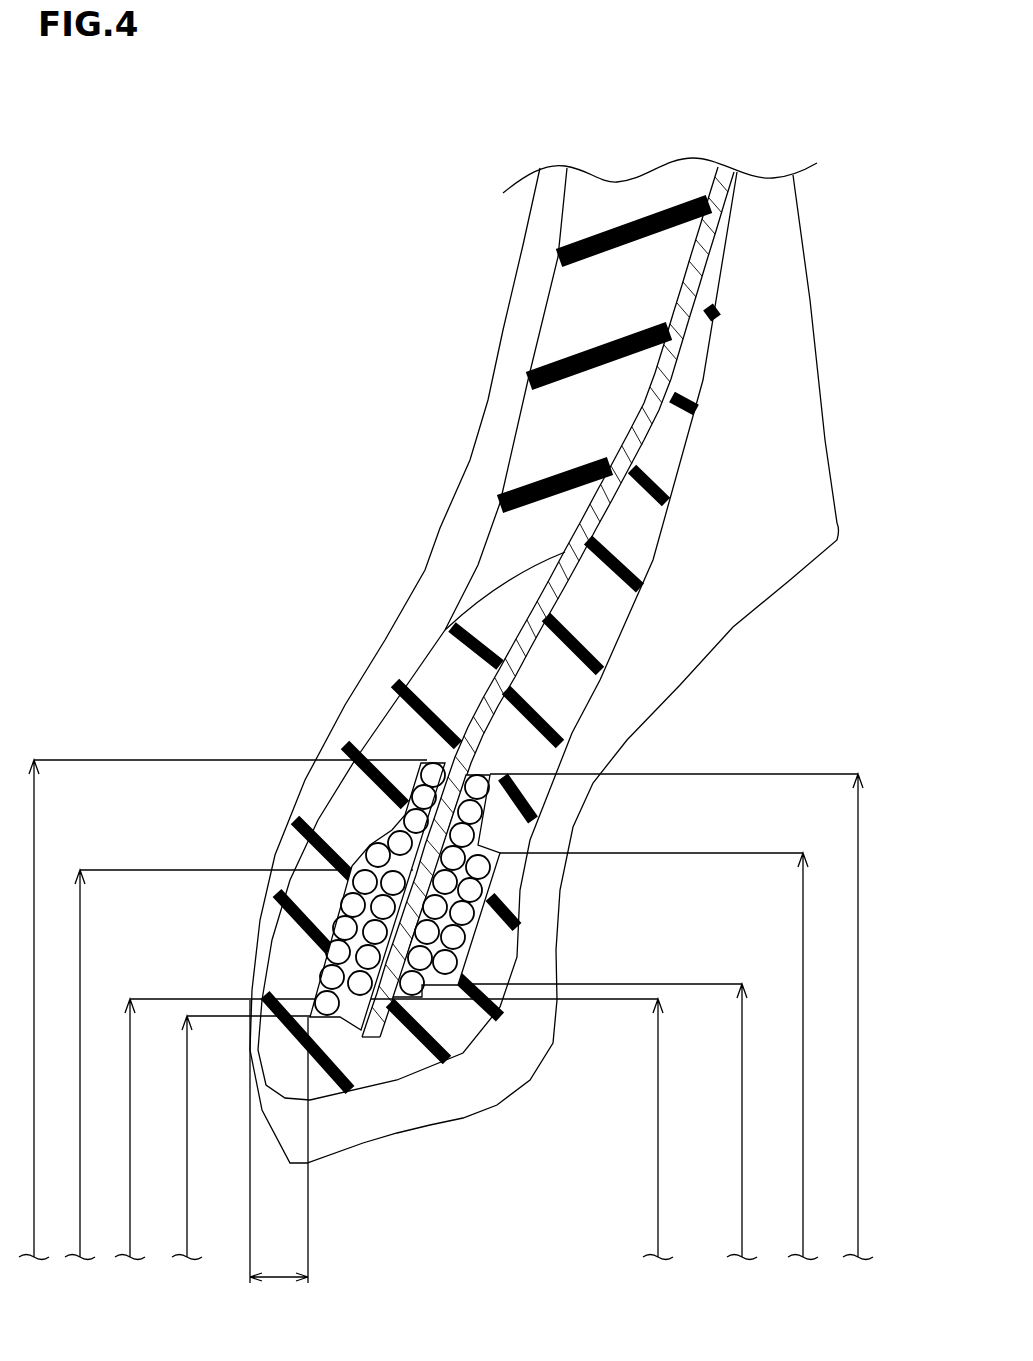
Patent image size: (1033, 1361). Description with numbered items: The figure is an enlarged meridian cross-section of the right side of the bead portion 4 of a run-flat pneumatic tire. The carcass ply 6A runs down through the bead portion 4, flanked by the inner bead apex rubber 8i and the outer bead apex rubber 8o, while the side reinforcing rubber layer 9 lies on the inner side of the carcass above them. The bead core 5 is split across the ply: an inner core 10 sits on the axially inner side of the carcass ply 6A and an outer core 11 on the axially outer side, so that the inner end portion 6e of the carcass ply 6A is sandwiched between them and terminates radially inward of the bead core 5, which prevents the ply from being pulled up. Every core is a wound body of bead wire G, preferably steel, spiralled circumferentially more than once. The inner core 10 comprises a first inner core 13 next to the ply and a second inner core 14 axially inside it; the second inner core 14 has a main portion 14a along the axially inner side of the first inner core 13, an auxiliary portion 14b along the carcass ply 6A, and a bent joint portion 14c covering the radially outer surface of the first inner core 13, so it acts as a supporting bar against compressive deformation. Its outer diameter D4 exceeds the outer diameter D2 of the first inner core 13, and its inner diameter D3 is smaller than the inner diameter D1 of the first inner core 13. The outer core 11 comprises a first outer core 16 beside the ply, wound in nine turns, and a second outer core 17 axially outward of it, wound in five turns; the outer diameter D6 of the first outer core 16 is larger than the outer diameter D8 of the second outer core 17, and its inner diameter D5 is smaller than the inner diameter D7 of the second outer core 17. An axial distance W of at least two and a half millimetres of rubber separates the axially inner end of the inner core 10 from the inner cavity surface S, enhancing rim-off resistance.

The bead portion 4 is at (324, 713).
The bead core 5 is at (509, 744).
The carcass ply 6A is at (645, 445).
The inner end portion of the carcass ply 6e is at (405, 918).
The inner bead apex rubber 8i is at (437, 677).
The outer bead apex rubber 8o is at (603, 617).
The side reinforcing rubber layer 9 is at (550, 437).
The inner core 10 is at (299, 1027).
The outer core 11 is at (484, 1006).
The first inner core 13 is at (374, 1028).
The second inner core 14 is at (291, 1004).
The main portion 14a is at (330, 1000).
The auxiliary portion 14b is at (410, 825).
The joint portion 14c is at (400, 843).
The first outer core 16 is at (414, 990).
The second outer core 17 is at (453, 992).
The bead wire G is at (355, 905).
The inner cavity surface S is at (440, 528).
The axial distance W is at (279, 1157).
The inner diameter of the first inner core D1 is at (385, 1129).
The outer diameter of the first inner core D2 is at (238, 1065).
The inner diameter of the second inner core D3 is at (238, 1138).
The outer diameter of the second inner core D4 is at (220, 1010).
The inner diameter of the first outer core D5 is at (658, 1129).
The outer diameter of the first outer core D6 is at (684, 1017).
The inner diameter of the second outer core D7 is at (592, 1122).
The outer diameter of the second outer core D8 is at (646, 1056).